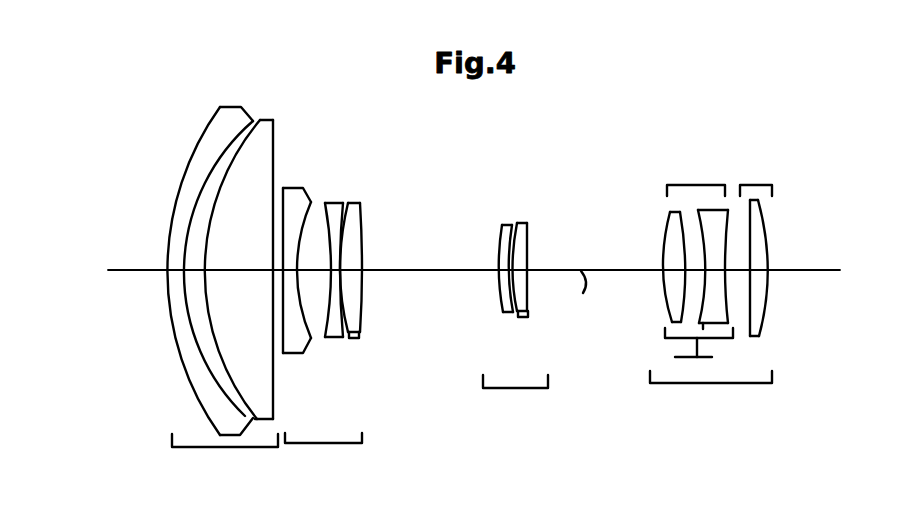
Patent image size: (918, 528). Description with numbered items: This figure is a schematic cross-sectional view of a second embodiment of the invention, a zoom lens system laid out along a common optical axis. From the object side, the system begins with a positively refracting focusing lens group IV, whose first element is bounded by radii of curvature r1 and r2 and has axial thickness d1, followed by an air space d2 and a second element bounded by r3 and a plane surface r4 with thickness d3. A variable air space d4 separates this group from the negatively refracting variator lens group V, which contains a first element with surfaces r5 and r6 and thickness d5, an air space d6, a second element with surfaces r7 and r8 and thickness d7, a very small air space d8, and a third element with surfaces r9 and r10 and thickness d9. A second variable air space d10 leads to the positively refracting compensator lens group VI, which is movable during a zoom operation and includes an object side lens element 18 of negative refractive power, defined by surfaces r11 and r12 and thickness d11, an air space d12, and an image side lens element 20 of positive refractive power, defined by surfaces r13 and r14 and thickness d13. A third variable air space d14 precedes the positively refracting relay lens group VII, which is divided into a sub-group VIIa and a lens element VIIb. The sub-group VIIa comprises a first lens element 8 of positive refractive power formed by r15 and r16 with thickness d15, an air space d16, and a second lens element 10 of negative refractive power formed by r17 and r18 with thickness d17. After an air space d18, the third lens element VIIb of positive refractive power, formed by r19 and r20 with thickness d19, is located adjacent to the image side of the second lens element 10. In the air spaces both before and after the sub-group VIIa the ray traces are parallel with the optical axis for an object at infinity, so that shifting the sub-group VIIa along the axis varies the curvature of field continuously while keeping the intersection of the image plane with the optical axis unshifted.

The radius of curvature r1 is at (205, 137).
The radius of curvature r2 is at (217, 378).
The radius of curvature r3 is at (244, 130).
The radius of curvature r4 is at (274, 370).
The radius of curvature r5 is at (282, 190).
The radius of curvature r6 is at (311, 342).
The radius of curvature r7 is at (318, 212).
The radius of curvature r8 is at (356, 340).
The radius of curvature r9 is at (348, 213).
The radius of curvature r10 is at (362, 330).
The radius of curvature r11 is at (500, 231).
The radius of curvature r12 is at (511, 318).
The radius of curvature r13 is at (518, 227).
The radius of curvature r14 is at (530, 320).
The radius of curvature r15 is at (668, 224).
The radius of curvature r16 is at (680, 320).
The radius of curvature r17 is at (700, 204).
The radius of curvature r18 is at (722, 332).
The radius of curvature r19 is at (752, 203).
The radius of curvature r20 is at (762, 333).
The axial distance d1 is at (169, 268).
The axial distance d2 is at (183, 285).
The axial distance d3 is at (238, 269).
The axial distance d4 is at (272, 283).
The axial distance d5 is at (285, 262).
The axial distance d6 is at (299, 276).
The axial distance d7 is at (345, 250).
The axial distance d8 is at (348, 285).
The axial distance d9 is at (358, 268).
The axial distance d10 is at (428, 275).
The axial distance d11 is at (500, 264).
The axial distance d12 is at (505, 283).
The axial distance d13 is at (522, 266).
The axial distance d14 is at (530, 302).
The axial distance d15 is at (670, 264).
The axial distance d16 is at (691, 275).
The axial distance d17 is at (713, 266).
The axial distance d18 is at (735, 272).
The axial distance d19 is at (757, 268).
The first lens element 8 is at (670, 318).
The second lens element 10 is at (676, 357).
The object side lens element 18 is at (500, 308).
The image side lens element 20 is at (578, 272).
The focusing lens group IV is at (214, 476).
The variator lens group V is at (312, 474).
The compensator lens group VI is at (500, 415).
The relay lens group VII is at (690, 410).
The sub-group VIIa is at (696, 178).
The third lens element VIIb is at (764, 178).